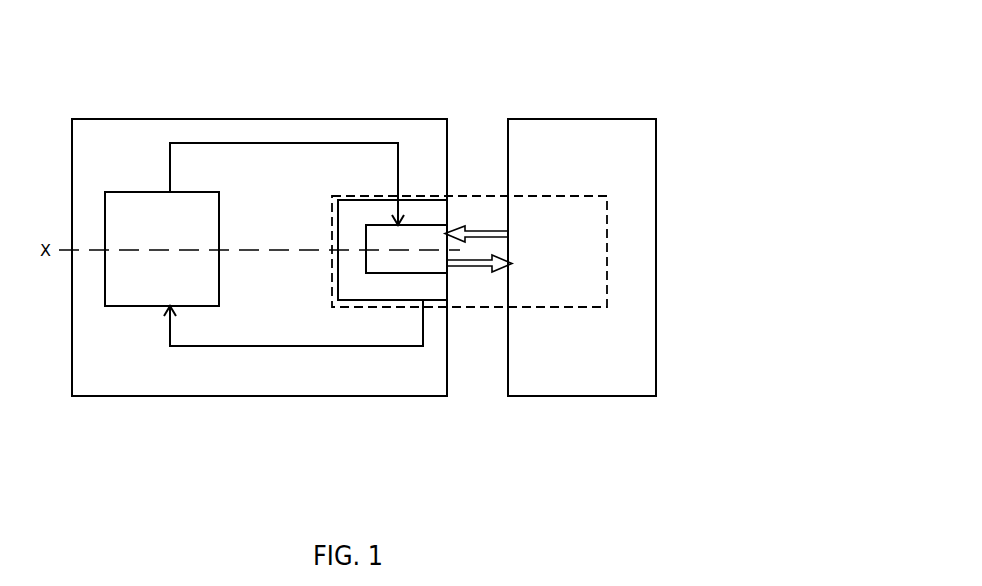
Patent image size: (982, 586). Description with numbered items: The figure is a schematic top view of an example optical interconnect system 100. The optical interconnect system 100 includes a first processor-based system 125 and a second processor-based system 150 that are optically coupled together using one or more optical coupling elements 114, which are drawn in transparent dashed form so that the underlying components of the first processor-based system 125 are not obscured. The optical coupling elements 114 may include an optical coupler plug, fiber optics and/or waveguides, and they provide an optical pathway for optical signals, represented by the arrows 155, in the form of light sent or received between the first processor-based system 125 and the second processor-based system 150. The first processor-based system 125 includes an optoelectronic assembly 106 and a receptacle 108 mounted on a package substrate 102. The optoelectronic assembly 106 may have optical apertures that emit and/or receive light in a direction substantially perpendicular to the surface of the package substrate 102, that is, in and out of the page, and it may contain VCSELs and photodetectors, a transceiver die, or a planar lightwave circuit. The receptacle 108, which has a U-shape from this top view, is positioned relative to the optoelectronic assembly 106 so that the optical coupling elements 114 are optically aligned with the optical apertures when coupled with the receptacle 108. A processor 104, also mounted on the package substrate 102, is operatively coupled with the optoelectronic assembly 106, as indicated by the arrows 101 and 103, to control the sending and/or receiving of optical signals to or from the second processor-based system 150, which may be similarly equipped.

The optical interconnect system 100 is at (558, 79).
The arrow 101 is at (247, 143).
The package substrate 102 is at (134, 372).
The arrow 103 is at (247, 346).
The processor 104 is at (177, 260).
The optoelectronic assembly 106 is at (422, 260).
The receptacle 108 is at (409, 296).
The optical coupling elements 114 is at (463, 196).
The first processor-based system 125 is at (259, 280).
The second processor-based system 150 is at (595, 397).
The arrows 155 is at (497, 237).